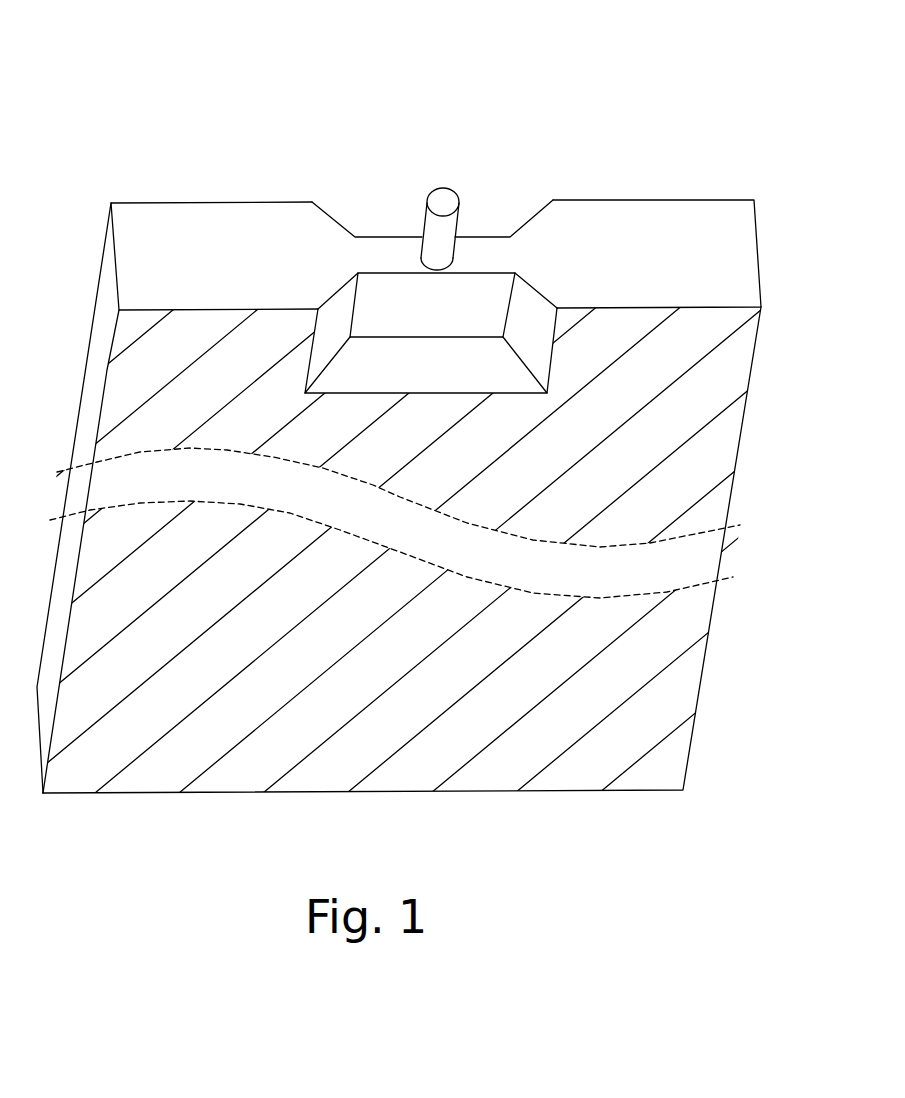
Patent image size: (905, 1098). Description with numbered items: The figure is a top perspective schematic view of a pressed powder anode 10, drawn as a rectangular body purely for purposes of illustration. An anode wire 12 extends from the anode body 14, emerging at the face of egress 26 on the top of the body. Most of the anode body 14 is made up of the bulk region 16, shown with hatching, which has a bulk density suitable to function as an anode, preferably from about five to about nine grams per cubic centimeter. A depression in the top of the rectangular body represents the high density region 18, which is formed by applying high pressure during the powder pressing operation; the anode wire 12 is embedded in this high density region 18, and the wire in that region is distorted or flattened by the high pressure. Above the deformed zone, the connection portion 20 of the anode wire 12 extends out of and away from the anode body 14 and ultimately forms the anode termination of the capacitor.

The pressed powder anode 10 is at (710, 169).
The anode wire 12 is at (414, 215).
The anode body 14 is at (108, 370).
The bulk region 16 is at (672, 420).
The high density region 18 is at (477, 298).
The connection portion 20 is at (442, 232).
The face of egress 26 is at (658, 252).